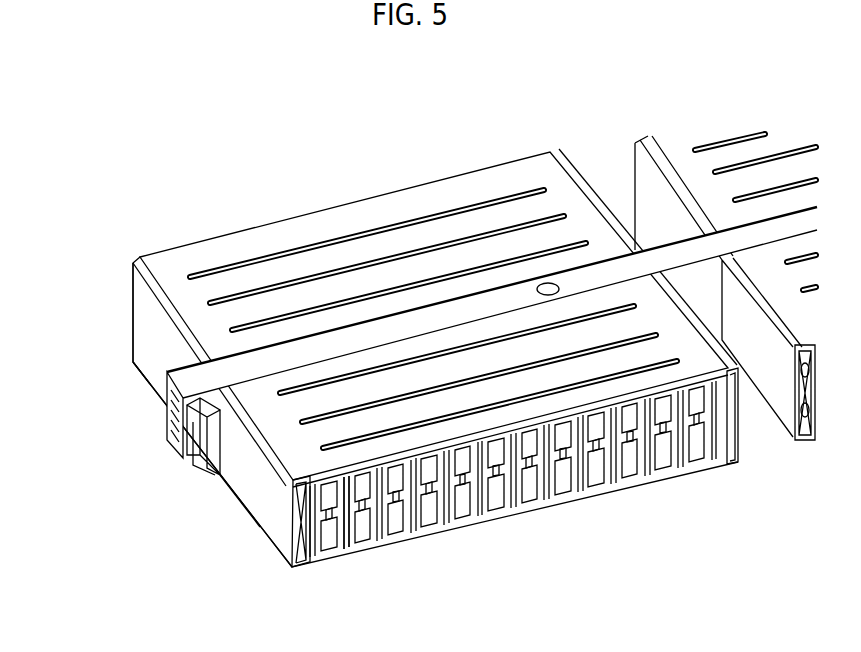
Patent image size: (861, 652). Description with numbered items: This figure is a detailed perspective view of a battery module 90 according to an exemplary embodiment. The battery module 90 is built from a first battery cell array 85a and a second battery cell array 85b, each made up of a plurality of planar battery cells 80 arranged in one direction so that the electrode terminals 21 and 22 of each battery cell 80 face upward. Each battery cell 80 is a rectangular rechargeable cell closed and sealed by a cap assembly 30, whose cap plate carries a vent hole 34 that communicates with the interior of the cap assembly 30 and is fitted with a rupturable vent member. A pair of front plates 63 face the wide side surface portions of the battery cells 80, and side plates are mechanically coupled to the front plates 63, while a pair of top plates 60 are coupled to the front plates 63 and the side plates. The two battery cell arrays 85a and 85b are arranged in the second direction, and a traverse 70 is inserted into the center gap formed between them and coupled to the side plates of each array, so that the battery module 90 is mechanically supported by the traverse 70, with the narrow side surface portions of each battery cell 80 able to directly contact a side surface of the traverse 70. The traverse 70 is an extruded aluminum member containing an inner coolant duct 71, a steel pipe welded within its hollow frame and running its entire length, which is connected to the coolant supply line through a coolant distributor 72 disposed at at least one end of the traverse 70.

The battery module 90 is at (236, 188).
The top plate 60 is at (442, 197).
The front plate 63 is at (637, 178).
The traverse 70 is at (439, 298).
The inner coolant duct 71 is at (140, 442).
The coolant distributor 72 is at (173, 437).
The first battery cell array 85a is at (112, 380).
The second battery cell array 85b is at (205, 508).
The battery cell 80 is at (515, 507).
The cap assembly 30 is at (350, 513).
The electrode terminal 21 is at (362, 545).
The electrode terminal 22 is at (367, 495).
The vent hole 34 is at (532, 472).